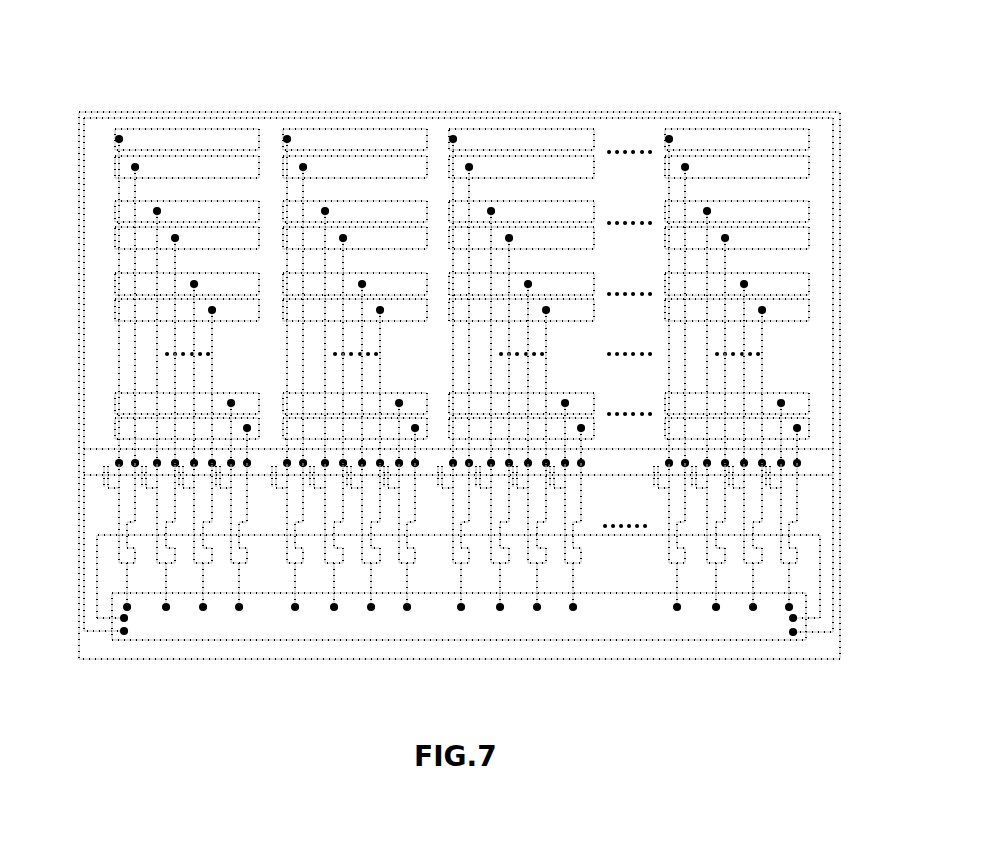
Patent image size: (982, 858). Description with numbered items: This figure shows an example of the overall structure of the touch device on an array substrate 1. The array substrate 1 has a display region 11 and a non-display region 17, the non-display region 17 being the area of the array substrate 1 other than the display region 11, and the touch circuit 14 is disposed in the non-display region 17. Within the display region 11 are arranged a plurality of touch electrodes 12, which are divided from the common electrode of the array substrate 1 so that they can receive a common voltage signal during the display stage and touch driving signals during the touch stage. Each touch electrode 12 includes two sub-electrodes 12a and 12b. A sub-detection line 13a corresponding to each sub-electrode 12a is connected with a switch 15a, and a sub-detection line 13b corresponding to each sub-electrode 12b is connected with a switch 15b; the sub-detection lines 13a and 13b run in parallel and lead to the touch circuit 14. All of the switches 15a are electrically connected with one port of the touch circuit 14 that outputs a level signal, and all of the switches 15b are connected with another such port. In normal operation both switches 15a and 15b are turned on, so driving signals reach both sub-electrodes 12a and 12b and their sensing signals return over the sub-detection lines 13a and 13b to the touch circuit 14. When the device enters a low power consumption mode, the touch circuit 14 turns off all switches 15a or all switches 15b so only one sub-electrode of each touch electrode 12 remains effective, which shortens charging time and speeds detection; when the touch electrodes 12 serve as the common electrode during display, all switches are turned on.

The array substrate 1 is at (590, 112).
The display region 11 is at (477, 118).
The touch electrode 12 is at (757, 45).
The sub-electrode 12a is at (710, 130).
The sub-electrode 12b is at (757, 165).
The sub-detection line 13a is at (118, 362).
The sub-detection line 13b is at (760, 385).
The touch circuit 14 is at (567, 638).
The switch 15a is at (102, 472).
The switch 15b is at (795, 535).
The non-display region 17 is at (255, 647).